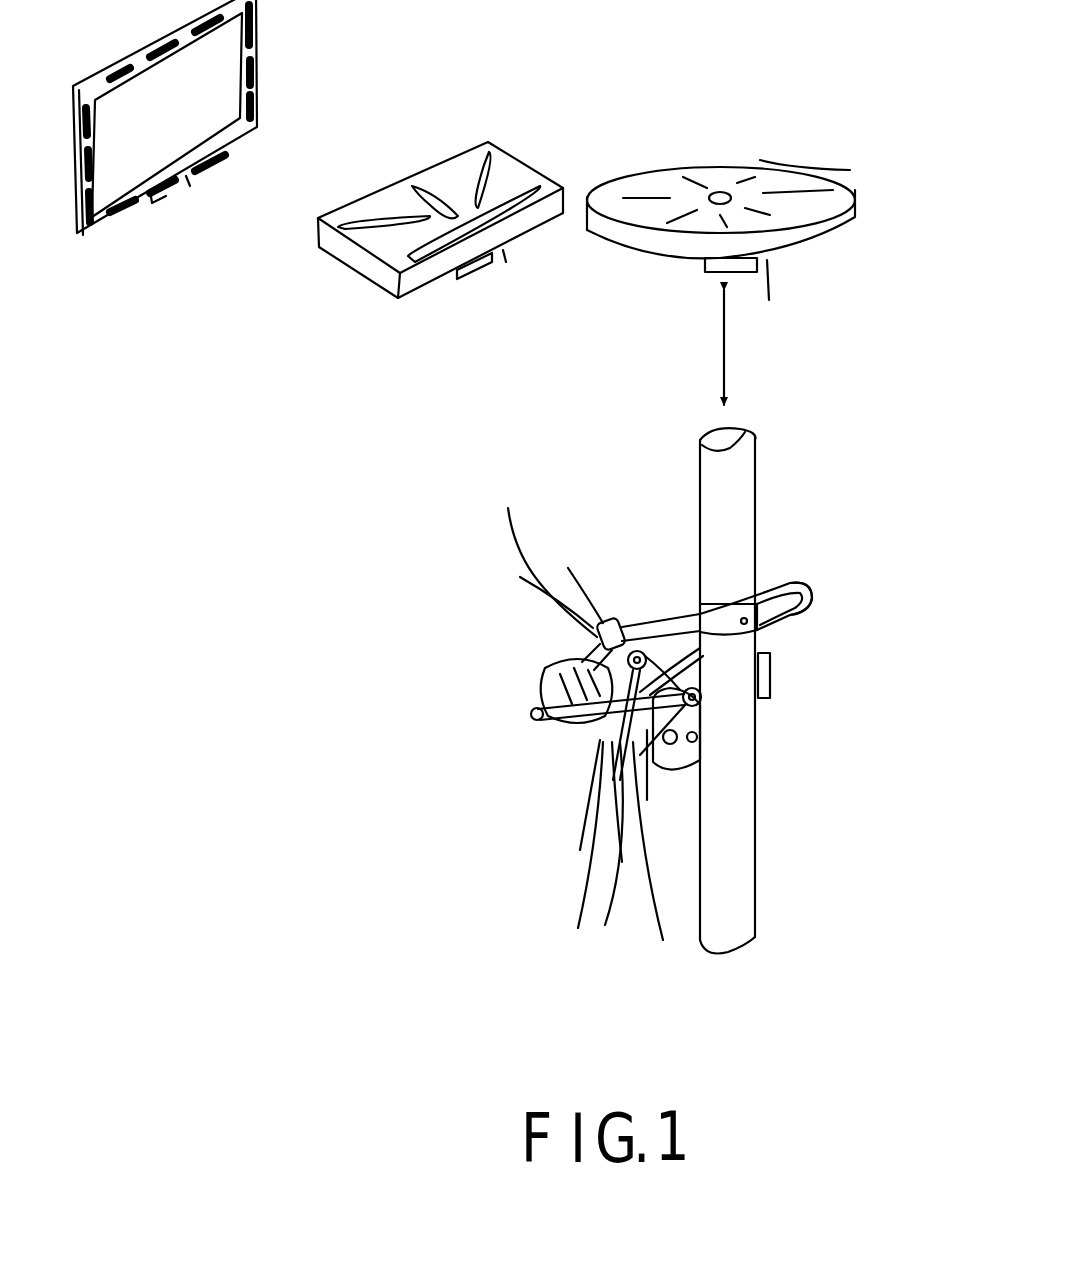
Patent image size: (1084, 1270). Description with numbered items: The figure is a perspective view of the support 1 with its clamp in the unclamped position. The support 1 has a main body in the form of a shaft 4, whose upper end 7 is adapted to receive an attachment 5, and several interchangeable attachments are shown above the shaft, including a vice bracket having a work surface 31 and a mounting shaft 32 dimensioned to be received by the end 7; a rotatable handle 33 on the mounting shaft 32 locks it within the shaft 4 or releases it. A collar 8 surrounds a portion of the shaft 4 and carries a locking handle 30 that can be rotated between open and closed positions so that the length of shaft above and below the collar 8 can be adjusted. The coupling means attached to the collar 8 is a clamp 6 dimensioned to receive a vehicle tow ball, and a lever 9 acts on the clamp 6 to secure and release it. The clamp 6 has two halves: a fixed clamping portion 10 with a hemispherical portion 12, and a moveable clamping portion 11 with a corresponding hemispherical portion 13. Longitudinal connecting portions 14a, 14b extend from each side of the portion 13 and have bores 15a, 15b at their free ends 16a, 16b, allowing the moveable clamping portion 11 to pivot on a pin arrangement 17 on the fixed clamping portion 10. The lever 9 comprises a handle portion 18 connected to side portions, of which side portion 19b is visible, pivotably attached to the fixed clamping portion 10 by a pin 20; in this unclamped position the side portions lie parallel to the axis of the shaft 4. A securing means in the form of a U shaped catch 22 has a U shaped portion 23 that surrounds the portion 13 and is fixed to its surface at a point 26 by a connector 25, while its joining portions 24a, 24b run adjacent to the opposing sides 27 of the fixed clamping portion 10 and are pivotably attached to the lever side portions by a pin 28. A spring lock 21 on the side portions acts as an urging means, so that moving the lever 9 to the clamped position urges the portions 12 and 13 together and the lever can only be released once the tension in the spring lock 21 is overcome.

The support 1 is at (832, 842).
The shaft 4 is at (647, 551).
The attachment 5 is at (258, 58).
The clamp 6 is at (538, 634).
The end of the shaft 7 is at (757, 437).
The collar 8 is at (765, 606).
The lever 9 is at (815, 600).
The fixed clamping portion 10 is at (653, 627).
The moveable clamping portion 11 is at (530, 717).
The hemispherical portion 12 is at (558, 728).
The hemispherical portion 13 is at (582, 752).
The longitudinal connecting portion 14a is at (527, 582).
The longitudinal connecting portion 14b is at (590, 864).
The bore 15a is at (563, 573).
The bore 15b is at (615, 829).
The free end 16a is at (530, 548).
The free end 16b is at (617, 940).
The pin arrangement 17 is at (585, 658).
The handle portion 18 is at (767, 583).
The side portion 19b is at (687, 720).
The pin 20 is at (700, 737).
The spring lock 21 is at (652, 775).
The U shaped catch 22 is at (533, 737).
The U shaped portion 23 is at (553, 743).
The joining portion 24a is at (628, 662).
The joining portion 24b is at (664, 874).
The connector 25 is at (533, 710).
The attachment point 26 is at (537, 723).
The opposing side 27 is at (703, 698).
The pin 28 is at (707, 710).
The handle 30 is at (772, 673).
The work surface 31 is at (783, 162).
The mounting shaft 32 is at (157, 193).
The handle 33 is at (188, 180).